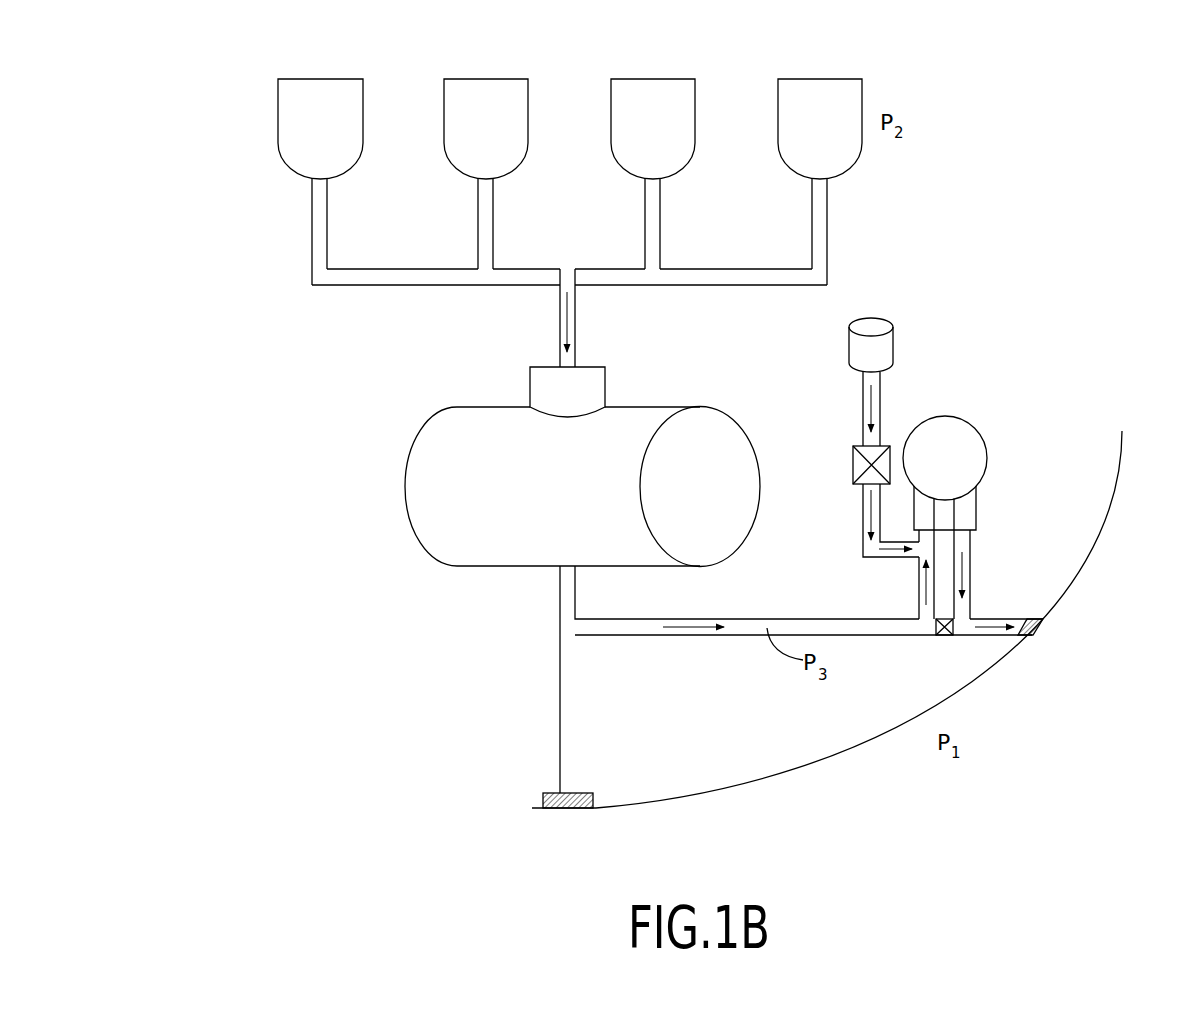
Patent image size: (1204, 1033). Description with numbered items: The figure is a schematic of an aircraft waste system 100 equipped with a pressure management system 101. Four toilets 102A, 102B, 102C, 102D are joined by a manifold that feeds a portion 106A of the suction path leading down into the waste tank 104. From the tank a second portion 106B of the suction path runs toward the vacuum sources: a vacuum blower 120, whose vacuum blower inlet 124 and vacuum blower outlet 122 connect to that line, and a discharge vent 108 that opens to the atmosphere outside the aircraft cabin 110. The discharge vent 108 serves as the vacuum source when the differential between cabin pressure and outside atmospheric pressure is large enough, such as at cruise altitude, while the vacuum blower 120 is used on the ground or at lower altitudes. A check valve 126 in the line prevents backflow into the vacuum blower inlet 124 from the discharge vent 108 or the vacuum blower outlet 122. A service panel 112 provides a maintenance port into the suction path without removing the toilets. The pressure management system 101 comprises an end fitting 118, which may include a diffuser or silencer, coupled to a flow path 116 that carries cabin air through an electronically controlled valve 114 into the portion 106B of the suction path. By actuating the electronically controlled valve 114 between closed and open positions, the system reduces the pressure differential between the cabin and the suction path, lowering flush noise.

The aircraft waste system 100 is at (1052, 78).
The pressure management system 101 is at (982, 322).
The toilet 102A is at (320, 78).
The toilet 102B is at (486, 78).
The toilet 102C is at (648, 78).
The toilet 102D is at (815, 78).
The waste tank 104 is at (405, 483).
The portion of the suction path 106A is at (575, 335).
The portion of the suction path 106B is at (723, 619).
The discharge vent 108 is at (1032, 630).
The aircraft cabin 110 is at (1097, 540).
The service panel 112 is at (568, 803).
The electronically controlled valve 114 is at (853, 465).
The flow path 116 is at (866, 418).
The end fitting 118 is at (850, 342).
The vacuum blower 120 is at (963, 432).
The vacuum blower outlet 122 is at (962, 512).
The vacuum blower inlet 124 is at (927, 518).
The check valve 126 is at (940, 636).